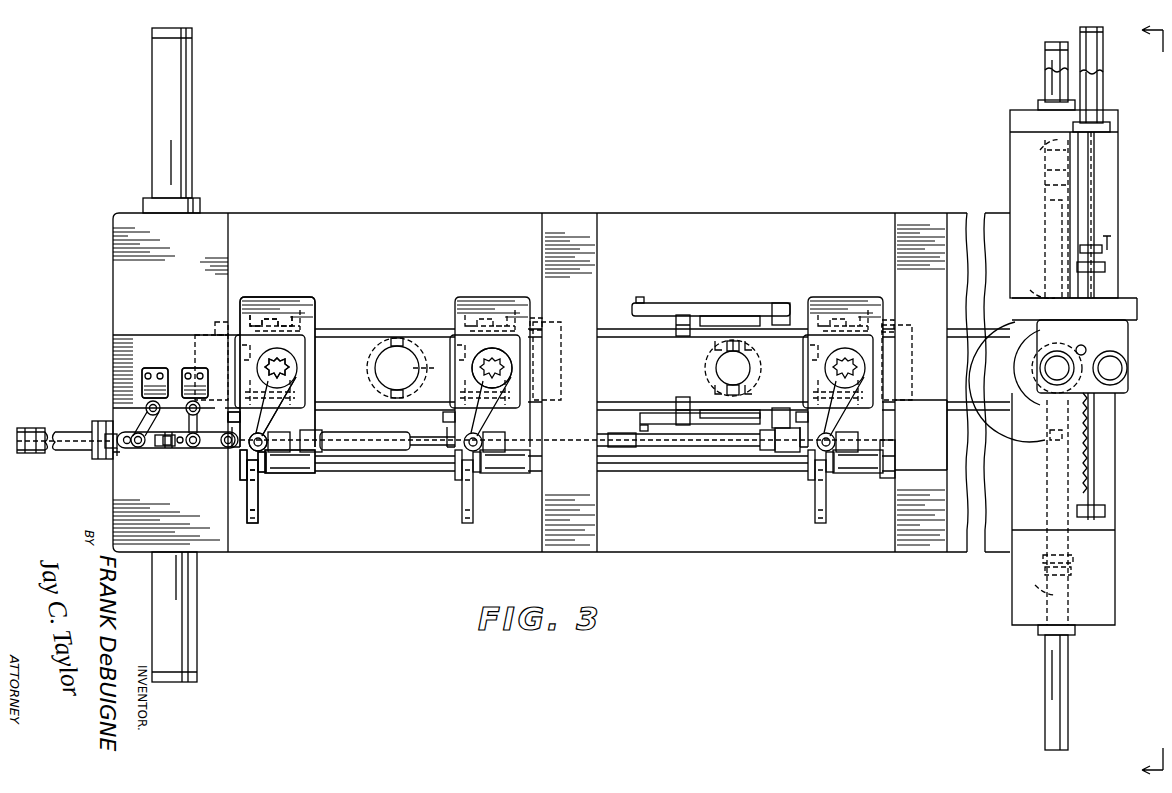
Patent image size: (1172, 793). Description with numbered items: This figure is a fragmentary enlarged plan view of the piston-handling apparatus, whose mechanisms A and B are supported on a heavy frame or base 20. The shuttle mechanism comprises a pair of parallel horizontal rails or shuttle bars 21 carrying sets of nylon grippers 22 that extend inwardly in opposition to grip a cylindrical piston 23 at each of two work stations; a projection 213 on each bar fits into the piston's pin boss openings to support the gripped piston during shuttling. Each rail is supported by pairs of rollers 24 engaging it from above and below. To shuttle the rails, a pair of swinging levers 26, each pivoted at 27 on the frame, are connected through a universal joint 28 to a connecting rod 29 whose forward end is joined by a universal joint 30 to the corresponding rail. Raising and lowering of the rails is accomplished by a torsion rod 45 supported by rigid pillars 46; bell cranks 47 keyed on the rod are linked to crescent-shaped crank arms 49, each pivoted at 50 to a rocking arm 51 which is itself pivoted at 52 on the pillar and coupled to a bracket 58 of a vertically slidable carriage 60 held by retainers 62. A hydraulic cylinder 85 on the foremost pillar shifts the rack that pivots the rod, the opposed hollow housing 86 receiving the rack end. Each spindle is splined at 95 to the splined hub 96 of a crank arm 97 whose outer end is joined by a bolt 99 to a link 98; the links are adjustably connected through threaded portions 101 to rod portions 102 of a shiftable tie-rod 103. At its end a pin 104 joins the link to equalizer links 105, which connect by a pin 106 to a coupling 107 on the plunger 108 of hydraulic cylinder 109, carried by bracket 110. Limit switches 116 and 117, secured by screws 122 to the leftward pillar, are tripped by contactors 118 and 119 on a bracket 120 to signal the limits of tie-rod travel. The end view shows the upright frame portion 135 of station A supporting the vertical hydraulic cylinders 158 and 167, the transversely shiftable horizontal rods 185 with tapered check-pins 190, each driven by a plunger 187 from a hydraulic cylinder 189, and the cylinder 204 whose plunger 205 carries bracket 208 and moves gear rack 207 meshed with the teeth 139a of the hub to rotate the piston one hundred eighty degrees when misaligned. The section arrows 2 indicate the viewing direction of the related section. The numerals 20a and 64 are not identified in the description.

The frame 20 is at (674, 227).
The shaft opening 20a is at (397, 350).
The rails 21 is at (355, 329).
The grippers 22 is at (395, 338).
The piston 23 is at (367, 368).
The rollers 24 is at (280, 318).
The levers 26 is at (700, 303).
The pivot 27 is at (640, 297).
The universal joint 28 is at (781, 303).
The connecting rod 29 is at (733, 318).
The universal joint 30 is at (683, 315).
The torsion rod 45 is at (350, 472).
The pillars 46 is at (113, 500).
The bell cranks 47 is at (245, 492).
The crank arm 49 is at (253, 523).
The pivot 50 is at (246, 480).
The rocking arm 51 is at (263, 475).
The pivot 52 is at (228, 418).
The bracket 58 is at (868, 332).
The carriage 60 is at (210, 350).
The retainers 62 is at (222, 322).
The head block 64 is at (310, 315).
The cylinder 85 is at (180, 91).
The housing 86 is at (186, 622).
The spline 95 is at (285, 364).
The splined hub 96 is at (475, 372).
The crank arm 97 is at (298, 380).
The link 98 is at (311, 434).
The bolt 99 is at (258, 452).
The threaded portions 101 is at (308, 460).
The rod portions 102 is at (345, 440).
The tie-rod 103 is at (596, 441).
The pin 104 is at (228, 448).
The equalizer links 105 is at (216, 448).
The pin 106 is at (107, 448).
The coupling 107 is at (116, 454).
The plunger 108 is at (70, 432).
The hydraulic cylinder 109 is at (35, 428).
The bracket 110 is at (103, 421).
The limit switch 116 is at (143, 375).
The limit switch 117 is at (183, 372).
The contactor 118 is at (146, 448).
The contactor 119 is at (176, 448).
The bracket 120 is at (163, 448).
The screws 122 is at (148, 368).
The frame portion 135 is at (1122, 298).
The teeth 139a is at (1048, 355).
The hydraulic cylinder 158 is at (1120, 385).
The hydraulic cylinder 167 is at (1080, 348).
The horizontal rods 185 is at (1050, 232).
The plunger 187 is at (1036, 367).
The hydraulic cylinder 189 is at (1050, 72).
The check-pin 190 is at (1036, 452).
The cylinder 204 is at (1103, 75).
The plunger 205 is at (1094, 172).
The gear rack 207 is at (1094, 480).
The bracket 208 is at (1108, 250).
The projection 213 is at (758, 298).
The mechanism A is at (1129, 430).
The mechanism B is at (889, 548).
The section line 2- 2 is at (1138, 404).